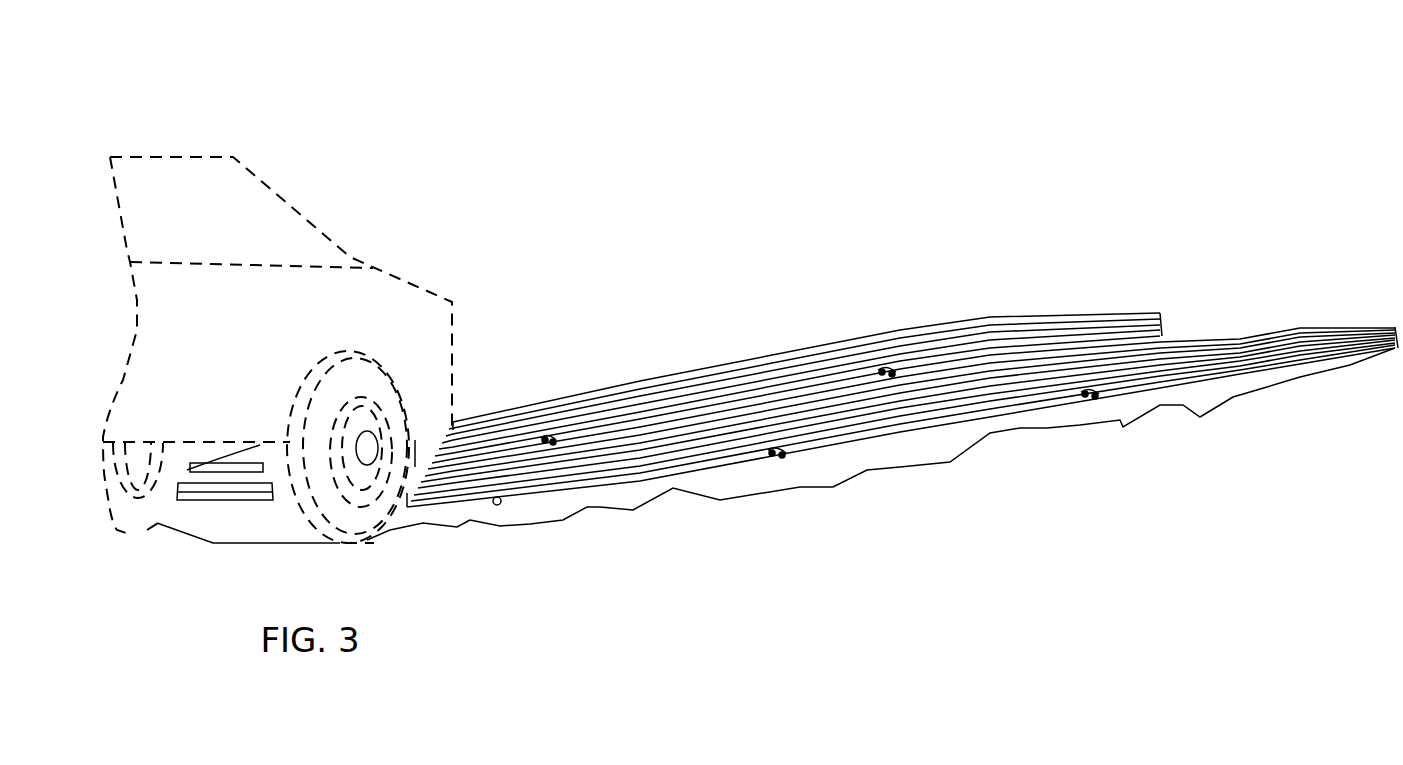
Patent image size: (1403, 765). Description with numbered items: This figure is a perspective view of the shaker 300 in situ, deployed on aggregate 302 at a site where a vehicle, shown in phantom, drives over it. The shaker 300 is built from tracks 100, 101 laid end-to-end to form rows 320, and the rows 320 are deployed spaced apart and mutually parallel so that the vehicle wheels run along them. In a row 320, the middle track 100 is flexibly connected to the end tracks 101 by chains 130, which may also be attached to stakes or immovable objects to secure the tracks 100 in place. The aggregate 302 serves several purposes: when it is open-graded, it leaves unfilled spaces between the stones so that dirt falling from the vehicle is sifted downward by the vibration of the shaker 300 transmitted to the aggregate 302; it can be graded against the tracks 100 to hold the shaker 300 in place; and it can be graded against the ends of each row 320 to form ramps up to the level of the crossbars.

The shaker 300 is at (642, 152).
The track 100 is at (902, 411).
The end track 101 is at (468, 413).
The chains 130 is at (783, 455).
The aggregate 302 is at (1010, 422).
The row 320 is at (1116, 311).